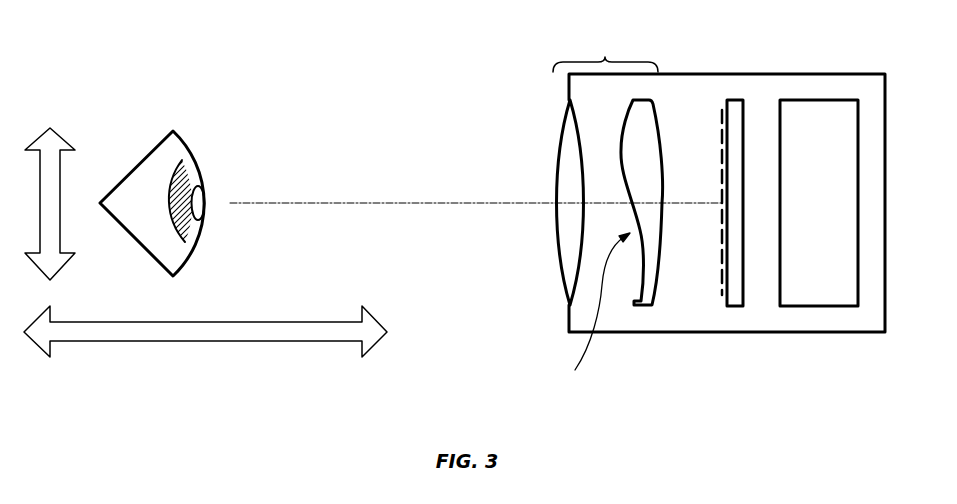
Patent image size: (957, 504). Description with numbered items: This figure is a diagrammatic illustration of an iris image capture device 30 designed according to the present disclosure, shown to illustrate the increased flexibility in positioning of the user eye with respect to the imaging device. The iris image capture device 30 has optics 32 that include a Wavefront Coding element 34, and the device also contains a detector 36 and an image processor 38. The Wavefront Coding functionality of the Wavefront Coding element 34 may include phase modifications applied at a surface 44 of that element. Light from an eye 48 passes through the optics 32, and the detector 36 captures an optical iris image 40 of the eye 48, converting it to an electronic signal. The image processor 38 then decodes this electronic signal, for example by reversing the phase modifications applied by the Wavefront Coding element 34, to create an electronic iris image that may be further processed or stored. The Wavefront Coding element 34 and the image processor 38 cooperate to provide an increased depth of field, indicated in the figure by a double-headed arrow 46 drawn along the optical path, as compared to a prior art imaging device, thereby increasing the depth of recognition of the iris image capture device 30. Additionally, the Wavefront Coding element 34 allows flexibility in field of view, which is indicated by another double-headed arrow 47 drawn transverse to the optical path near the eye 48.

The iris image capture device 30 is at (843, 74).
The optics 32 is at (605, 57).
The Wavefront Coding element 34 is at (642, 307).
The detector 36 is at (732, 100).
The image processor 38 is at (828, 212).
The optical iris image 40 is at (722, 285).
The surface 44 is at (584, 317).
The double-headed arrow 46 is at (203, 340).
The double-headed arrow 47 is at (50, 128).
The eye 48 is at (182, 138).